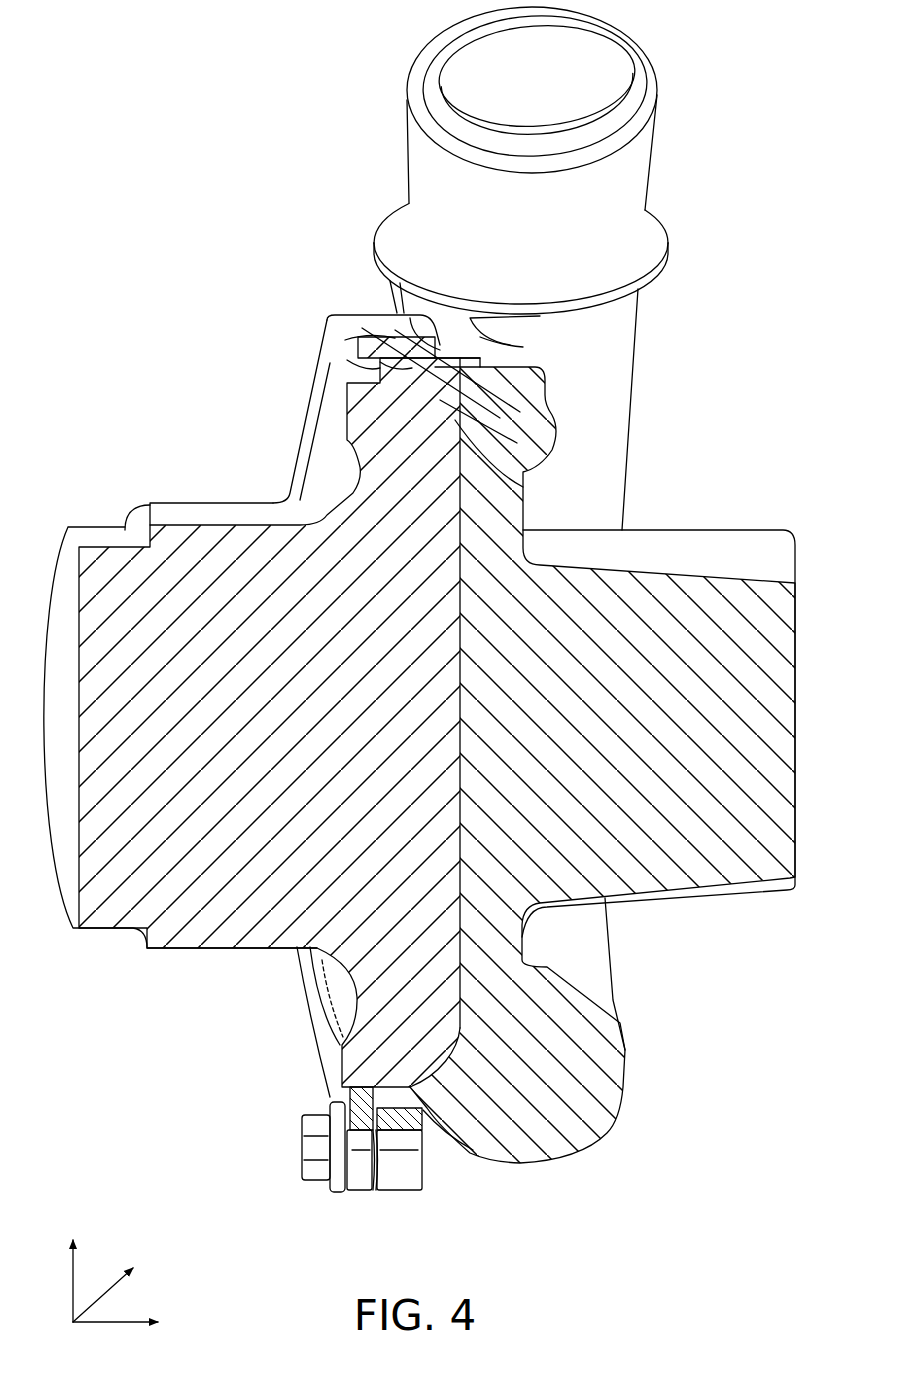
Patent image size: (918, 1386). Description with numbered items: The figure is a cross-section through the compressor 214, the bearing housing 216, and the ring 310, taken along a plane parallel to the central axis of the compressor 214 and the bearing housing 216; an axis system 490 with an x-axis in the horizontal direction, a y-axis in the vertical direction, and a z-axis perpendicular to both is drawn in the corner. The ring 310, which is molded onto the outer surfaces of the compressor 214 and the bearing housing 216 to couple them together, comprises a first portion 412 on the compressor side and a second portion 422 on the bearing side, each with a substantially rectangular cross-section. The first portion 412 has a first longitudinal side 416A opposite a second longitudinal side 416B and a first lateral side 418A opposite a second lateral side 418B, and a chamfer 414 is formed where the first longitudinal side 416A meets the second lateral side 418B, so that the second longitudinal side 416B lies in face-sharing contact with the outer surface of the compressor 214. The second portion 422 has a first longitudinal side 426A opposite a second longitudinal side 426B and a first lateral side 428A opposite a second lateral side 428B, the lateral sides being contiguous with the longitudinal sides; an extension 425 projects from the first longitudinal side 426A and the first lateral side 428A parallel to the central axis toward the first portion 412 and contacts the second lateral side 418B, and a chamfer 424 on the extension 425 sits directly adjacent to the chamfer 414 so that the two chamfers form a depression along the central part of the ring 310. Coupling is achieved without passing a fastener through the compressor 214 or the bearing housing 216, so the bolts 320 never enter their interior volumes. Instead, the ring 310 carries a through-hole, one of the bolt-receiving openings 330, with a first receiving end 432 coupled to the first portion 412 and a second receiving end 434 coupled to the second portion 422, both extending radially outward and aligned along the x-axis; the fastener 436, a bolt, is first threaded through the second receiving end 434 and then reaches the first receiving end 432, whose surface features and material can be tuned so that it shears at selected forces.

The compressor 214 is at (740, 530).
The bearing housing 216 is at (133, 500).
The ring 310 is at (352, 1191).
The bolts 320 is at (302, 1098).
The bolt-receiving openings 330 is at (347, 1193).
The first portion 412 is at (397, 315).
The chamfer 414 is at (388, 340).
The first longitudinal side 416A is at (415, 345).
The second longitudinal side 416B is at (523, 347).
The first lateral side 418A is at (480, 337).
The second lateral side 418B is at (517, 443).
The second portion 422 is at (327, 322).
The chamfer 424 is at (365, 345).
The extension 425 is at (490, 352).
The first longitudinal side 426A is at (523, 487).
The second longitudinal side 426B is at (375, 352).
The first lateral side 428A is at (395, 338).
The second lateral side 428B is at (380, 362).
The first receiving end 432 is at (380, 1192).
The second receiving end 434 is at (360, 1193).
The fastener 436 is at (302, 1145).
The axis system 490 is at (162, 1252).